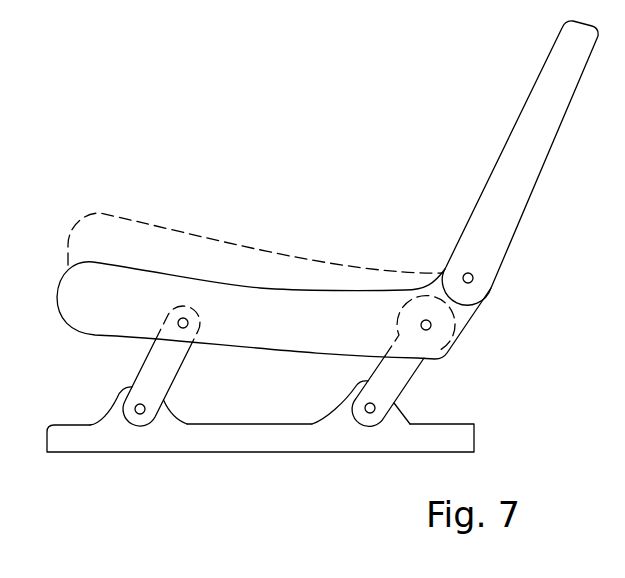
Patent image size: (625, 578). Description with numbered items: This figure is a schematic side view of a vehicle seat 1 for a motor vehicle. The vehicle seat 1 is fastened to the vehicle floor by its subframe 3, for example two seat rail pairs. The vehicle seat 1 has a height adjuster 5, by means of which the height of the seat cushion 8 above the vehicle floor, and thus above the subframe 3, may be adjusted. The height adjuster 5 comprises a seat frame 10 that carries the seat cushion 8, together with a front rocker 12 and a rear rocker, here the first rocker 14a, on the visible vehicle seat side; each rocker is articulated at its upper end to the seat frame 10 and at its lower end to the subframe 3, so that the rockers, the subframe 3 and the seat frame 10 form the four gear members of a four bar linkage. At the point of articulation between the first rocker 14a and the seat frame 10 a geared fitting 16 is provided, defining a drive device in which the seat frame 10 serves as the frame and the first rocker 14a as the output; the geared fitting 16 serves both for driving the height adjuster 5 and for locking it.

The vehicle seat 1 is at (192, 125).
The subframe 3 is at (247, 446).
The height adjuster 5 is at (417, 404).
The seat cushion 8 is at (228, 262).
The seat frame 10 is at (272, 308).
The front rocker 12 is at (163, 372).
The first rocker 14a is at (402, 380).
The geared fitting 16 is at (441, 323).